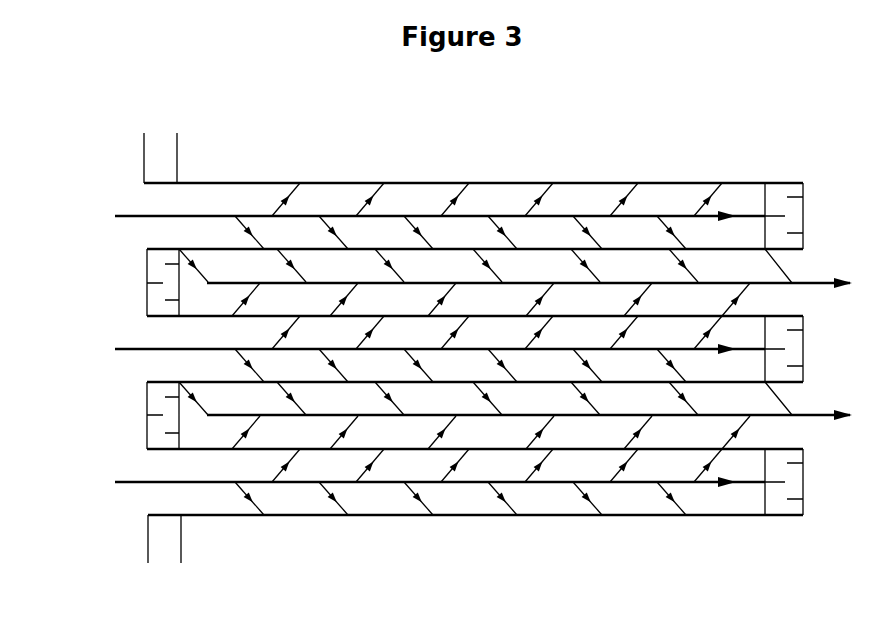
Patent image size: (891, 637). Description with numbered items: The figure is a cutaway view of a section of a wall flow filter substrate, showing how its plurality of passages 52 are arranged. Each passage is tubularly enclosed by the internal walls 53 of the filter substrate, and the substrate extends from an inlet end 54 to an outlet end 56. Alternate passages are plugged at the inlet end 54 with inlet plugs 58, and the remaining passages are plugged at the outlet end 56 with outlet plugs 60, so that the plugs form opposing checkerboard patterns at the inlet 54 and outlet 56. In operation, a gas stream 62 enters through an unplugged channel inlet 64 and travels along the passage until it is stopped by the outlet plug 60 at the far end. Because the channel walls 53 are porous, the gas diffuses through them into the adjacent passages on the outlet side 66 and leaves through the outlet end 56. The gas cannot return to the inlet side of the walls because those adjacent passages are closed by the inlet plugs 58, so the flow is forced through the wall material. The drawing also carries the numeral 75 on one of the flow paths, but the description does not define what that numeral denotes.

The passages 52 is at (187, 249).
The internal walls 53 is at (440, 249).
The inlet end 54 is at (124, 138).
The outlet end 56 is at (818, 178).
The inlet plugs 58 is at (146, 164).
The outlet plugs 60 is at (805, 212).
The gas stream 62 is at (226, 216).
The channel inlet 64 is at (473, 329).
The outlet side 66 is at (529, 359).
The flow passage 75 is at (460, 512).